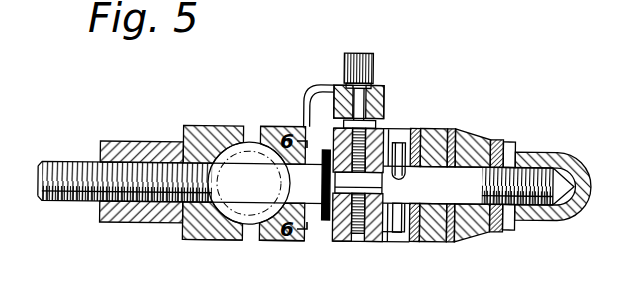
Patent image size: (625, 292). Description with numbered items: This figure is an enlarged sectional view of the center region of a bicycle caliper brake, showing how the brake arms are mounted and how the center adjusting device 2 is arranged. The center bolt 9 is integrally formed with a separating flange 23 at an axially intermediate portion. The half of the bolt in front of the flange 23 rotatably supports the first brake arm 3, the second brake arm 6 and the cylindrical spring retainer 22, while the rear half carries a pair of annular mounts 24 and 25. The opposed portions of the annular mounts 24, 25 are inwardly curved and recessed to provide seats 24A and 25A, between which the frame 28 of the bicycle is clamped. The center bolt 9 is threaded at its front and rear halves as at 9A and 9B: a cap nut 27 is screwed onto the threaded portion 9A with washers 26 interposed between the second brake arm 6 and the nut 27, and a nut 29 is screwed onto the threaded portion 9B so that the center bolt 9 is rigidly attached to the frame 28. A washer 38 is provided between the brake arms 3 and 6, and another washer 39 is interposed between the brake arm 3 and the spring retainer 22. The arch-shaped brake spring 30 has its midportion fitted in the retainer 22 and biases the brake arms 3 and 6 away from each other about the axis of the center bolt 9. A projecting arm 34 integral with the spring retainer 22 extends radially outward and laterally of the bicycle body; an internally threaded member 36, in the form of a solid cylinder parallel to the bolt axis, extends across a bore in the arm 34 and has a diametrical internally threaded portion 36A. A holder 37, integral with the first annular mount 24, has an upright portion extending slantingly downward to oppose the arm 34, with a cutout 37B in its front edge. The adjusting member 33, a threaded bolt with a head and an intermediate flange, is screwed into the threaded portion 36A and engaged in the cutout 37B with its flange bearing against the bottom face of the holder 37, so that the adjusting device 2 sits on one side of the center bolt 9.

The center adjusting device 2 is at (344, 141).
The first brake arm 3 is at (440, 133).
The second brake arm 6 is at (470, 138).
The center bolt 9 is at (253, 194).
The threaded portion 9A is at (532, 222).
The threaded portion 9B is at (54, 200).
The spring retainer 22 is at (438, 215).
The separating flange 23 is at (323, 214).
The annular mount 24 is at (270, 134).
The seat 24A is at (268, 230).
The annular mount 25 is at (190, 127).
The seat 25A is at (220, 238).
The washers 26 is at (496, 143).
The cap nut 27 is at (566, 160).
The frame 28 is at (248, 134).
The nut 29 is at (118, 147).
The brake spring 30 is at (397, 138).
The adjusting member 33 is at (363, 54).
The projecting arm 34 is at (402, 228).
The internally threaded member 36 is at (390, 212).
The internally threaded portion 36A is at (348, 232).
The holder 37 is at (340, 91).
The cutout 37B is at (373, 110).
The washer 38 is at (470, 236).
The washer 39 is at (417, 130).